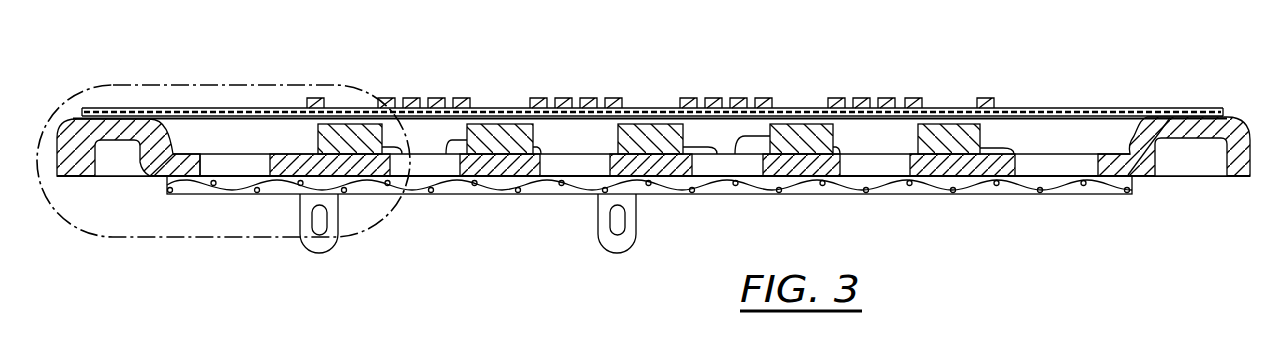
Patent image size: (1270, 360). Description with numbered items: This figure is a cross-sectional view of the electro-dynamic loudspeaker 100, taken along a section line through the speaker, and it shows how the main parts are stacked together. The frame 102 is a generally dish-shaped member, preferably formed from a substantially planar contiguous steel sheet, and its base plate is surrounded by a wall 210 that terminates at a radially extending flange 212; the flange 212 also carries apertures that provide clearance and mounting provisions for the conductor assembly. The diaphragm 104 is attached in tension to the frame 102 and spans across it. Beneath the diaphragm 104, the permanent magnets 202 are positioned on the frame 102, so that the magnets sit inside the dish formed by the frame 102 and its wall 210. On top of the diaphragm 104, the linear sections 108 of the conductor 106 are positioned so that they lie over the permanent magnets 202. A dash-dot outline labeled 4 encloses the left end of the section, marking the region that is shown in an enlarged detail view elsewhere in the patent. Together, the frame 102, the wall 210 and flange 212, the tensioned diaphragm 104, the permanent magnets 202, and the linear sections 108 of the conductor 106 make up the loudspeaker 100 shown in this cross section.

The detail view of FIG. 4 is at (257, 84).
The electronic assembly 100 is at (646, 62).
The frame 102 is at (300, 147).
The diaphragm 104 is at (1078, 98).
The conductor 106 is at (652, 58).
The linear sections 108 is at (737, 98).
The permanent magnets 202 is at (402, 156).
The wall 210 is at (165, 129).
The flange 212 is at (97, 142).